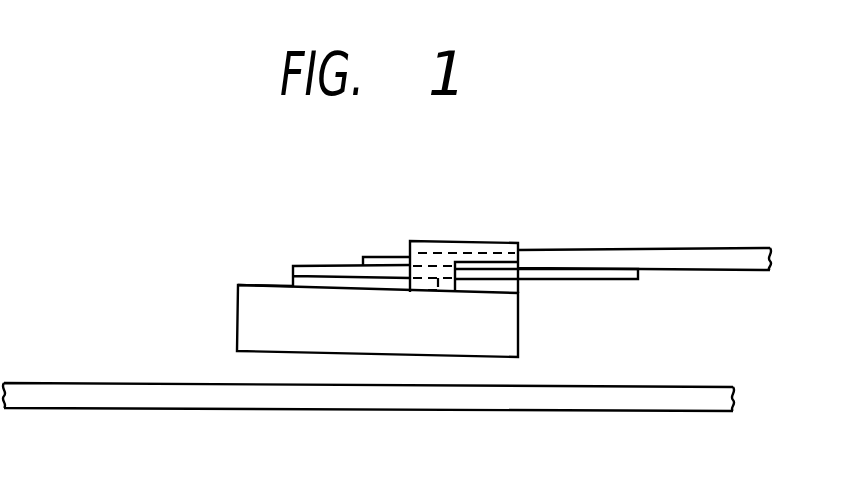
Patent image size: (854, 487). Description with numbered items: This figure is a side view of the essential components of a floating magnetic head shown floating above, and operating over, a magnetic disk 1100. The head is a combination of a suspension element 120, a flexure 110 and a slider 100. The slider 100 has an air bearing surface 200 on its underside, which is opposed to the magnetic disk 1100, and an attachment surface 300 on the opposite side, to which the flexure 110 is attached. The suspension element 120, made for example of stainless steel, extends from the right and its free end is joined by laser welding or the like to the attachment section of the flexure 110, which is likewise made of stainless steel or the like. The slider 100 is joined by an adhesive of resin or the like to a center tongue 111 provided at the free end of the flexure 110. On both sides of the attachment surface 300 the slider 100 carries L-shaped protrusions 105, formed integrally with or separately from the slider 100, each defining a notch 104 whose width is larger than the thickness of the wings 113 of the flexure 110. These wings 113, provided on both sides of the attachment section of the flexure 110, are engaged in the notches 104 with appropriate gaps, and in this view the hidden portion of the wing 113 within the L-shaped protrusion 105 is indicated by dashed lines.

The slider 100 is at (253, 308).
The flexure 110 is at (320, 268).
The center tongue 111 is at (351, 282).
The L-shaped protrusion 105 is at (440, 242).
The wing 113 is at (497, 270).
The suspension element 120 is at (707, 256).
The notch 104 is at (497, 284).
The attachment surface 300 is at (265, 285).
The magnetic disk 1100 is at (110, 397).
The air bearing surface 200 is at (340, 355).